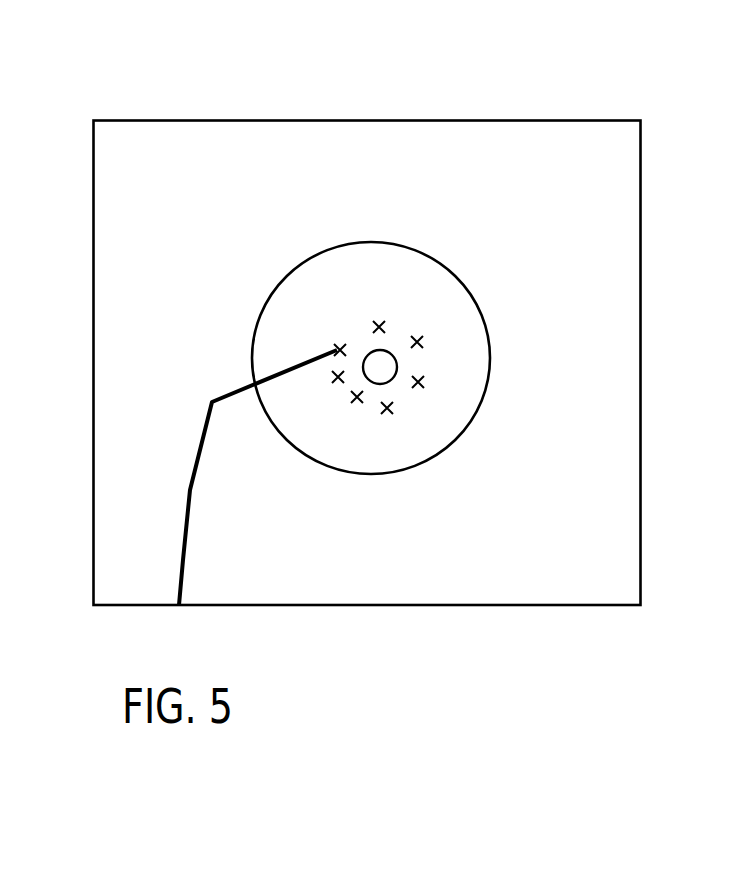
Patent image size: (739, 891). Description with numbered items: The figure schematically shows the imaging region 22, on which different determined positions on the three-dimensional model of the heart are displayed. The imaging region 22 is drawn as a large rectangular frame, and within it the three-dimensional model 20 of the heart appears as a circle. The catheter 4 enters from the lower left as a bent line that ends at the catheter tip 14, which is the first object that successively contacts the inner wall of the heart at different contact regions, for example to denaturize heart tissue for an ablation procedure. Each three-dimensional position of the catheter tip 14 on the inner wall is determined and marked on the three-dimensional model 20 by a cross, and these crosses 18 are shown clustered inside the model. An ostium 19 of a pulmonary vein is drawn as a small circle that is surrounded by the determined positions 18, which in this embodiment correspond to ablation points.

The imaging region 22 is at (181, 120).
The catheter 4 is at (184, 535).
The three-dimensional model 20 is at (423, 246).
The catheter tip 14 is at (336, 347).
The crosses 18 is at (448, 333).
The ostium 19 is at (398, 364).